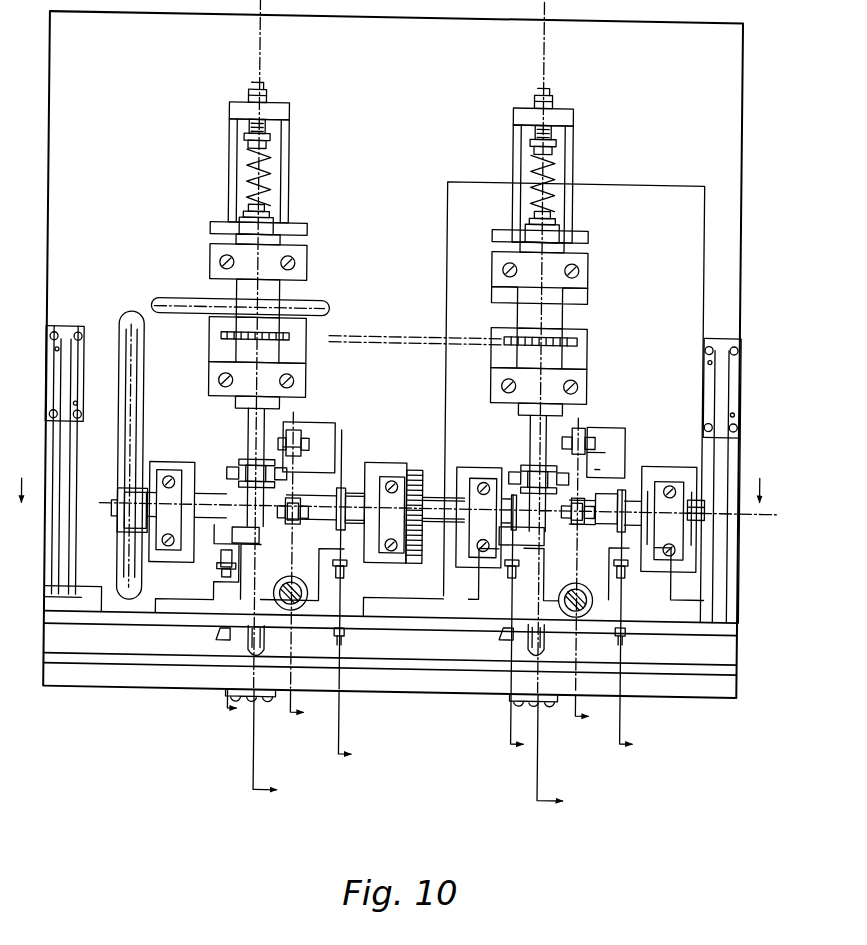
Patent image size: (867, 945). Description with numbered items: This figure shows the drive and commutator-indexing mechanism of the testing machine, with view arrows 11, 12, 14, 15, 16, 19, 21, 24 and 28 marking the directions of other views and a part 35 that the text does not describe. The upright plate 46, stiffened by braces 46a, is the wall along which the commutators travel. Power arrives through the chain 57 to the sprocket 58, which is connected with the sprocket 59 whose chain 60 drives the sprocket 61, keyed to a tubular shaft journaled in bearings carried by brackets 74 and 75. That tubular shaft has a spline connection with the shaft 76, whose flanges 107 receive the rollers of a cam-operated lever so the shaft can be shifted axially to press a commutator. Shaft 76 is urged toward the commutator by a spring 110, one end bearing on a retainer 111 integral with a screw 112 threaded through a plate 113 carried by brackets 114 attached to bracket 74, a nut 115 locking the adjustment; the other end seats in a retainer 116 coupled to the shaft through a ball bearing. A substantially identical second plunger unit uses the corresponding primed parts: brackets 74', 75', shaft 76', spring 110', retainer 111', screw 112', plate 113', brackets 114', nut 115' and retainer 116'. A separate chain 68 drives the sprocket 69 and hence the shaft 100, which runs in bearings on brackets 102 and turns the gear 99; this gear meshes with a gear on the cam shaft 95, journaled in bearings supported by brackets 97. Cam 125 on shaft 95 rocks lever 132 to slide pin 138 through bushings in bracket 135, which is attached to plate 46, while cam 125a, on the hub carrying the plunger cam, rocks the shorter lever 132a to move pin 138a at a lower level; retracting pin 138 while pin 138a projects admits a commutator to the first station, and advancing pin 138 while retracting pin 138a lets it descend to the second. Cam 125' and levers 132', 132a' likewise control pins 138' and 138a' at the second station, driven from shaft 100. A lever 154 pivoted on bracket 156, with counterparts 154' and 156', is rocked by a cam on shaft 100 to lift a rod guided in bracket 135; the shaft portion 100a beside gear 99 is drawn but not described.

The section line 11 is at (561, 753).
The section line 12 is at (275, 744).
The section line 14 is at (390, 481).
The section line 15 is at (622, 486).
The section line 16 is at (511, 484).
The section line 19 is at (342, 431).
The section line 21 is at (237, 478).
The section line 24 is at (578, 415).
The section line 28 is at (293, 414).
The shaft 35 is at (308, 614).
The vertical plate 46 is at (735, 629).
The braces 46a is at (76, 351).
The chain 57 is at (187, 307).
The sprocket 58 is at (297, 304).
The sprocket 59 is at (220, 340).
The chain 60 is at (386, 339).
The sprocket 61 is at (578, 338).
The chain 68 is at (136, 402).
The sprocket 69 is at (128, 537).
The bracket 74 is at (554, 264).
The bracket 74' is at (274, 249).
The bracket 75 is at (550, 392).
The bracket 75' is at (272, 386).
The shaft 76 is at (522, 470).
The shaft 76' is at (240, 465).
The cam shaft 95 is at (215, 555).
The brackets 97 is at (178, 470).
The gear 99 is at (414, 563).
The shaft 100 is at (610, 520).
The shaft section 100a is at (434, 500).
The brackets 102 is at (470, 477).
The flanges 107 is at (518, 468).
The spring 110 is at (570, 183).
The spring 110' is at (286, 177).
The retainer 111 is at (571, 143).
The retainer 111' is at (285, 140).
The screw 112 is at (573, 128).
The screw 112' is at (288, 125).
The plate 113 is at (559, 111).
The plate 113' is at (240, 116).
The brackets 114 is at (546, 183).
The brackets 114' is at (260, 170).
The nut 115 is at (529, 88).
The nut 115' is at (287, 92).
The retainer 116 is at (579, 215).
The retainer 116' is at (284, 210).
The cam 125 is at (609, 507).
The cam 125' is at (351, 495).
The cam 125a is at (258, 531).
The lever 132 is at (602, 568).
The lever 132' is at (320, 568).
The lever 132a is at (537, 570).
The lever 132a' is at (267, 554).
The bracket 135 is at (600, 610).
The rod 138 is at (635, 634).
The pin 138' is at (351, 639).
The pin 138a is at (490, 628).
The pin 138a' is at (211, 626).
The lever 154 is at (608, 471).
The lever 154' is at (316, 500).
The bracket 156 is at (623, 447).
The bracket 156' is at (327, 438).